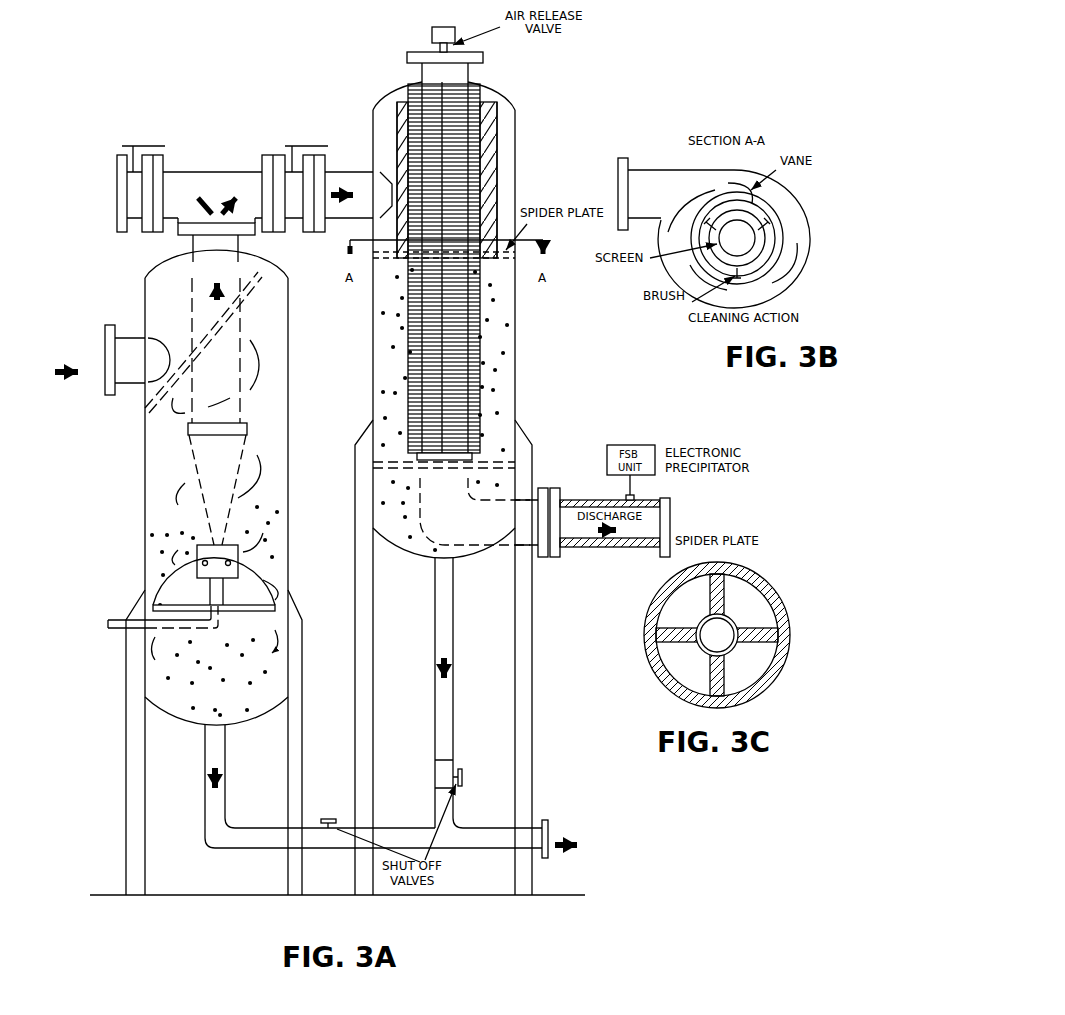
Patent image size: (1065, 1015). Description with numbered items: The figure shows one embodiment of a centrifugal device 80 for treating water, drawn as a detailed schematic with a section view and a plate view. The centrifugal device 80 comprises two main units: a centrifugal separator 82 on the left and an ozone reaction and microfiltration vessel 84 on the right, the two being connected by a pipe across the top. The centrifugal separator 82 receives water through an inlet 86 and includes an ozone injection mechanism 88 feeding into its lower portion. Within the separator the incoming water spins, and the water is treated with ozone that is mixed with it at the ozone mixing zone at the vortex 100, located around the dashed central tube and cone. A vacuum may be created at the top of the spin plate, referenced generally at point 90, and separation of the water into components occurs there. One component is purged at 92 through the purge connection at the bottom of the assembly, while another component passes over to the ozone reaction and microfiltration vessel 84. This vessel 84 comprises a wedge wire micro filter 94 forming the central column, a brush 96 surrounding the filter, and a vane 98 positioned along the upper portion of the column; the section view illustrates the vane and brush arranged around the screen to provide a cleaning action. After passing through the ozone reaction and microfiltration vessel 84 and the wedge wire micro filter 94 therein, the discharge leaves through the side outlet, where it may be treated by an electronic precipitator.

The centrifugal device 80 is at (140, 118).
The centrifugal separator 82 is at (142, 312).
The ozone reaction and microfiltration vessel 84 is at (514, 407).
The inlet 86 is at (110, 351).
The ozone injection mechanism 88 is at (110, 619).
The vacuum at the top of the spin plate 90 is at (240, 560).
The purge 92 is at (563, 819).
The wedge wire micro filter 94 is at (468, 352).
The brush 96 is at (480, 190).
The vane 98 is at (498, 148).
The ozone mixing zone at the vortex 100 is at (200, 472).